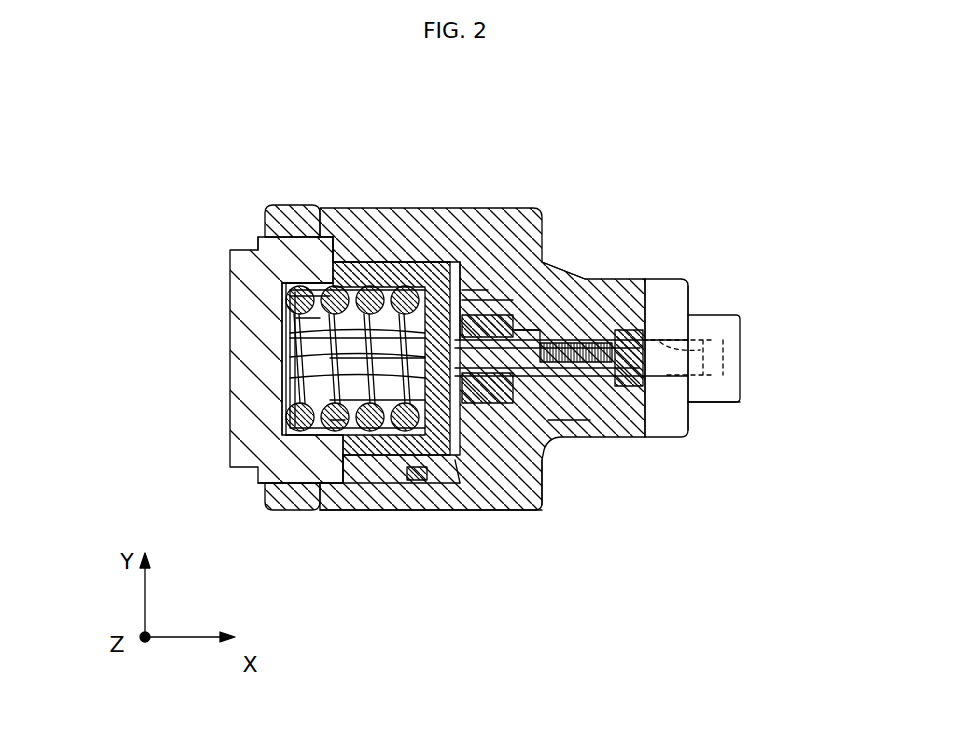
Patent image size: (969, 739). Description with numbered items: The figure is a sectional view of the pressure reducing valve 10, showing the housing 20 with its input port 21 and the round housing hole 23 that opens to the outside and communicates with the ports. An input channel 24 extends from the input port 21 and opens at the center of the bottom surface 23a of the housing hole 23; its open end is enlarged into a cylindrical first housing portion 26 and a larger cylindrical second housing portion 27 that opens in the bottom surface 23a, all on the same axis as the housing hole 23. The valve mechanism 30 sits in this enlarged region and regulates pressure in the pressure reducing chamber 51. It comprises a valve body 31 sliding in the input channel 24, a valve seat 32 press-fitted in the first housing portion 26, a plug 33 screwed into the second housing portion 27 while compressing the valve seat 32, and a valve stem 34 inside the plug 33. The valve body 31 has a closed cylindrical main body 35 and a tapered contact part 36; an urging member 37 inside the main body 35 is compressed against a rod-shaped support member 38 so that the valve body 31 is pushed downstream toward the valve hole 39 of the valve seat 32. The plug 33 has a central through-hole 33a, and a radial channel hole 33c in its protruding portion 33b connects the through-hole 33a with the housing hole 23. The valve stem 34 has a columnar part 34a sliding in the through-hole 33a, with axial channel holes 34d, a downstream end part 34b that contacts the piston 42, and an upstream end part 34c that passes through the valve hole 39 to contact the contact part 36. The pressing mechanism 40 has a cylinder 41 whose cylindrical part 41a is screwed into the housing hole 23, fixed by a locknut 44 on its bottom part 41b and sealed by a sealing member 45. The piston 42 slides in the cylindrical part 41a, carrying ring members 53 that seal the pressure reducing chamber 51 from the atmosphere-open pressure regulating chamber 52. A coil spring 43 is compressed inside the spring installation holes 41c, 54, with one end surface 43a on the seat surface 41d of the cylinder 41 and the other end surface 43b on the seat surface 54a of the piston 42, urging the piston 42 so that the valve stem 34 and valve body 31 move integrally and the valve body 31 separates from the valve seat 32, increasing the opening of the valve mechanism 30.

The pressure reducing valve 10 is at (645, 196).
The housing 20 is at (378, 225).
The input port 21 is at (718, 403).
The housing hole 23 is at (394, 500).
The bottom surface 23a is at (458, 507).
The input channel 24 is at (711, 315).
The first housing portion 26 is at (538, 512).
The second housing portion 27 is at (505, 300).
The valve mechanism 30 is at (527, 512).
The valve body 31 is at (585, 300).
The valve seat 32 is at (530, 330).
The plug 33 is at (520, 512).
The through-hole 33a is at (330, 358).
The protruding portion 33b is at (330, 400).
The channel hole 33c is at (330, 420).
The valve stem 34 is at (500, 507).
The columnar part 34a is at (466, 262).
The downstream end part 34b is at (328, 338).
The upstream end part 34c is at (520, 312).
The channel holes 34d is at (488, 290).
The main body 35 is at (590, 440).
The contact part 36 is at (605, 285).
The urging member 37 is at (655, 330).
The support member 38 is at (640, 352).
The valve hole 39 is at (548, 440).
The pressing mechanism 40 is at (349, 497).
The cylinder 41 is at (247, 250).
The cylindrical part 41a is at (420, 485).
The bottom part 41b is at (251, 250).
The spring installation hole 41c is at (306, 262).
The seat surface 41d is at (282, 395).
The piston 42 is at (343, 270).
The coil spring 43 is at (296, 485).
The one end surface 43a is at (300, 300).
The other end surface 43b is at (300, 283).
The locknut 44 is at (291, 205).
The sealing member 45 is at (448, 258).
The pressure reducing chamber 51 is at (455, 505).
The pressure regulating chamber 52 is at (313, 490).
The ring members 53 is at (418, 286).
The spring installation hole 54 is at (300, 455).
The seat surface 54a is at (305, 318).